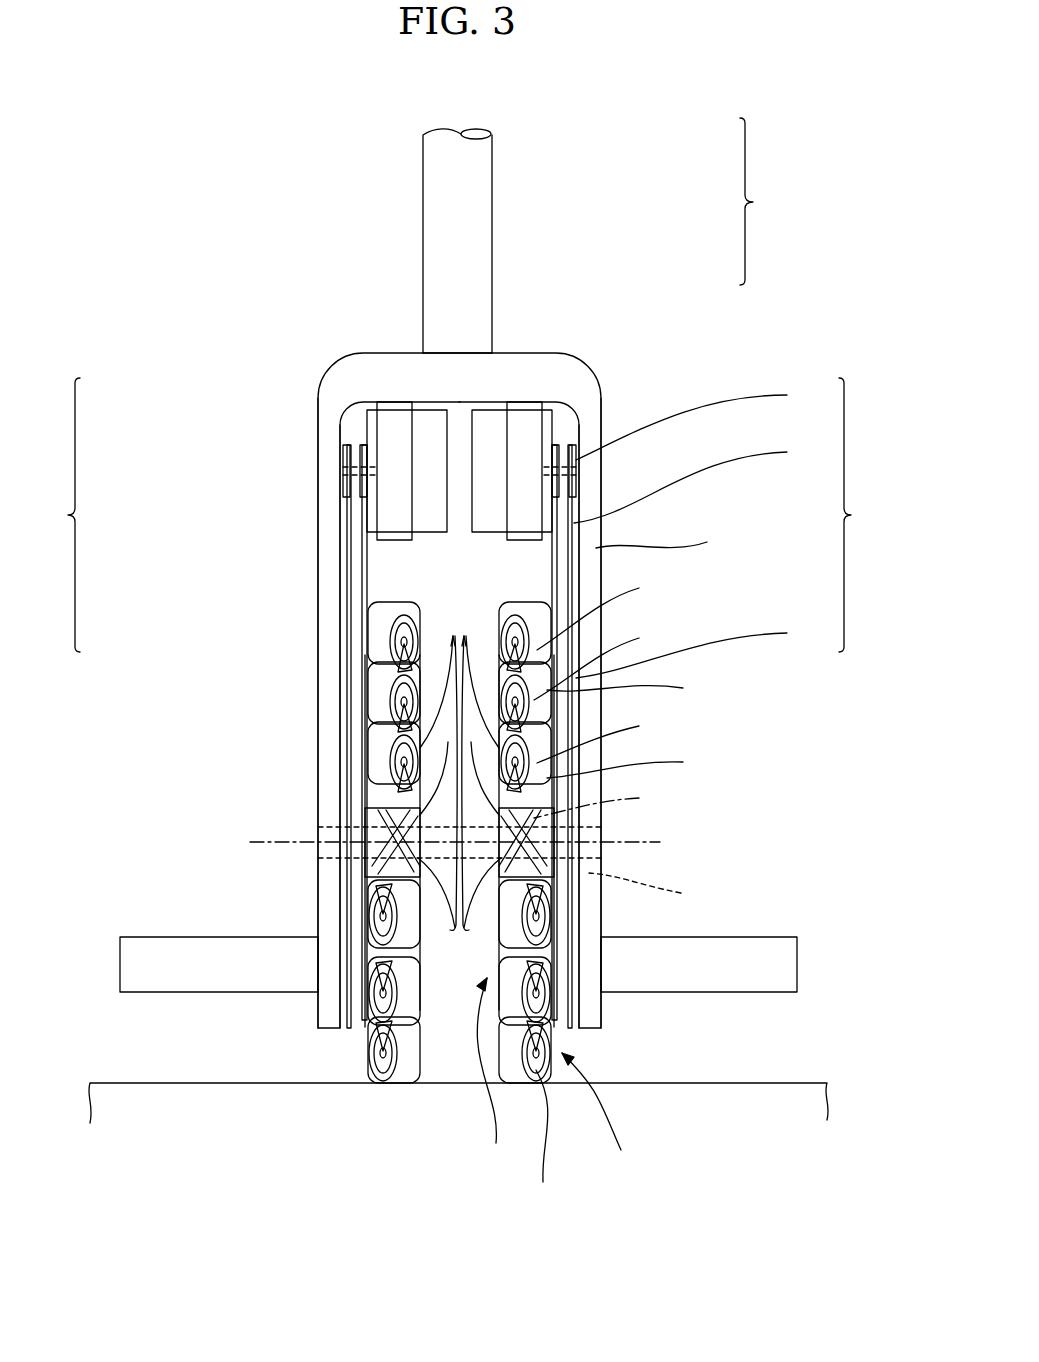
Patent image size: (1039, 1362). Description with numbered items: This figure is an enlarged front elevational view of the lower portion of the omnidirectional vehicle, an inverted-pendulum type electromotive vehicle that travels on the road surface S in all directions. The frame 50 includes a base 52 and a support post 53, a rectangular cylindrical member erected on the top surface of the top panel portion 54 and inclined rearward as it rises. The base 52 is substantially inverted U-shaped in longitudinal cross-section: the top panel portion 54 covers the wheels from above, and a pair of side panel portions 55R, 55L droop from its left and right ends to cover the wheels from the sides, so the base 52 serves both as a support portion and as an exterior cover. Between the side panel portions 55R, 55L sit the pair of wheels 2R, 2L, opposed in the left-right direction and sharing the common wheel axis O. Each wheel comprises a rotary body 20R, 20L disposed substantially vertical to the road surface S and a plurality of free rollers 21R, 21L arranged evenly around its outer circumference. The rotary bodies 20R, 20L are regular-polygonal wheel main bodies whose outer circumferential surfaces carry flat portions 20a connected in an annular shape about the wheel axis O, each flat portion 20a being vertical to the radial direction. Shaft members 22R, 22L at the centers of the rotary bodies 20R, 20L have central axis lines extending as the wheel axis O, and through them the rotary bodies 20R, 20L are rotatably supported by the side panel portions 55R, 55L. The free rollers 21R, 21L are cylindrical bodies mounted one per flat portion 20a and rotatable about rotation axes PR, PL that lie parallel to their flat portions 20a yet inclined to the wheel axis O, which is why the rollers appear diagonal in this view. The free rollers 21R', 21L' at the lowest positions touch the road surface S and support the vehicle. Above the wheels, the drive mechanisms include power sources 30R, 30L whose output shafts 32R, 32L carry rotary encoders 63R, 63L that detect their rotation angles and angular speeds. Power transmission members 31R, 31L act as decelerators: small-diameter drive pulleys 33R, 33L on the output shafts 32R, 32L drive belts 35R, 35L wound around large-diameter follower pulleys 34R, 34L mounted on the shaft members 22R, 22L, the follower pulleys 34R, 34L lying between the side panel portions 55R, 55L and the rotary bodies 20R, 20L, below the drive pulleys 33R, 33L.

The support post 53 is at (478, 163).
The frame 50 is at (764, 201).
The base 52 is at (554, 349).
The top panel portion 54 is at (458, 353).
The power source 30R is at (428, 420).
The power source 30L is at (487, 420).
The rotary encoder 63R is at (356, 422).
The rotary encoder 63L is at (563, 422).
The output shaft 32R is at (353, 452).
The output shaft 32L is at (567, 452).
The drive pulley 33R is at (343, 460).
The drive pulley 33L is at (702, 704).
The belt 35R is at (345, 523).
The belt 35L is at (688, 479).
The power transmission member 31R is at (50, 515).
The power transmission member 31L is at (869, 515).
The side panel portion 55R is at (323, 548).
The side panel portion 55L is at (665, 713).
The follower pulley 34R is at (343, 678).
The follower pulley 34L is at (694, 732).
The rotation axis PR is at (382, 650).
The rotation axis PL is at (591, 808).
The flat portion 20a is at (456, 783).
The free roller 21R is at (305, 695).
The free roller 21L is at (614, 695).
The shaft member 22R is at (330, 873).
The shaft member 22L is at (594, 861).
The wheel axis O is at (650, 840).
The road surface S is at (796, 1083).
The wheel 2R is at (357, 1053).
The wheel 2L is at (575, 916).
The rotary body 20R is at (432, 978).
The rotary body 20L is at (491, 906).
The free roller at lowest position 21R' is at (386, 1049).
The free roller at lowest position 21L' is at (537, 1049).